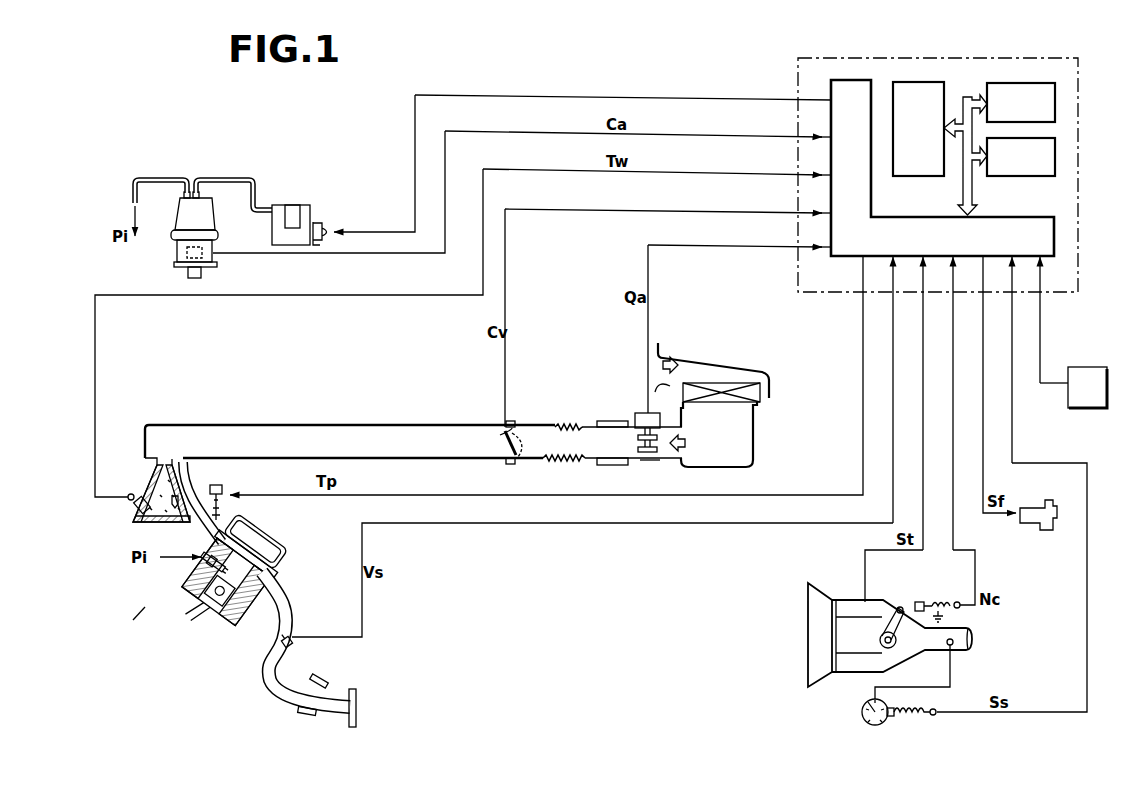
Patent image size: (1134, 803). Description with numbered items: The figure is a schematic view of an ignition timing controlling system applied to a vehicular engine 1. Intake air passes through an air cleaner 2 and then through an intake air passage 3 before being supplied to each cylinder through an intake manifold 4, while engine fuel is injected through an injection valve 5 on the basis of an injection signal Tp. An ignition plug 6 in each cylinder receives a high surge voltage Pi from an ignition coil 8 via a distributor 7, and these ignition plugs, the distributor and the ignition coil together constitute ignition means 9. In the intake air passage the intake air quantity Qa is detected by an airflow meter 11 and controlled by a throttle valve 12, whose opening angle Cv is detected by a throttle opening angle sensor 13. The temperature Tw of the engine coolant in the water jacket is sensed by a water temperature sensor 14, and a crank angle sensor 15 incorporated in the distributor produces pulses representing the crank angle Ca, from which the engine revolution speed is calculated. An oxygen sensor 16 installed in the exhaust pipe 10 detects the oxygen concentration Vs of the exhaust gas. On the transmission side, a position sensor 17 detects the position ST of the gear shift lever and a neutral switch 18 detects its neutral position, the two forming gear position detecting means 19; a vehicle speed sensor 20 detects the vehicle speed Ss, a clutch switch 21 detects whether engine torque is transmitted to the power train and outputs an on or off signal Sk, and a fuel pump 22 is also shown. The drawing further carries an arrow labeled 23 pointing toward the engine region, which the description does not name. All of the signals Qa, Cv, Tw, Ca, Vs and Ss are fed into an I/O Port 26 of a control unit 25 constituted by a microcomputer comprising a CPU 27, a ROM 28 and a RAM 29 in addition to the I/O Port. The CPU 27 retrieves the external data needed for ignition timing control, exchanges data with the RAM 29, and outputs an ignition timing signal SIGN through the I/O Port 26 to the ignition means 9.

The vehicular engine 1 is at (215, 578).
The air cleaner 2 is at (735, 402).
The intake air passage 3 is at (650, 461).
The intake manifold 4 is at (386, 425).
The injection valve 5 is at (223, 520).
The ignition plug 6 is at (203, 568).
The distributor 7 is at (190, 237).
The ignition coil 8 is at (295, 205).
The ignition means 9 is at (122, 188).
The exhaust pipe 10 is at (292, 649).
The airflow meter 11 is at (633, 418).
The throttle valve 12 is at (503, 443).
The throttle opening angle sensor 13 is at (522, 457).
The water temperature sensor 14 is at (128, 492).
The crank angle sensor 15 is at (185, 252).
The oxygen sensor 16 is at (290, 637).
The position sensor 17 is at (860, 617).
The neutral switch 18 is at (922, 601).
The gear position detecting means 19 is at (840, 578).
The vehicle speed sensor 20 is at (893, 721).
The clutch switch 21 is at (1100, 399).
The fuel pump 22 is at (1040, 532).
The intake system 23 is at (132, 620).
The control unit 25 is at (961, 160).
The I/O Port 26 is at (1058, 238).
The CPU 27 is at (917, 82).
The ROM 28 is at (1012, 83).
The RAM 29 is at (1058, 160).